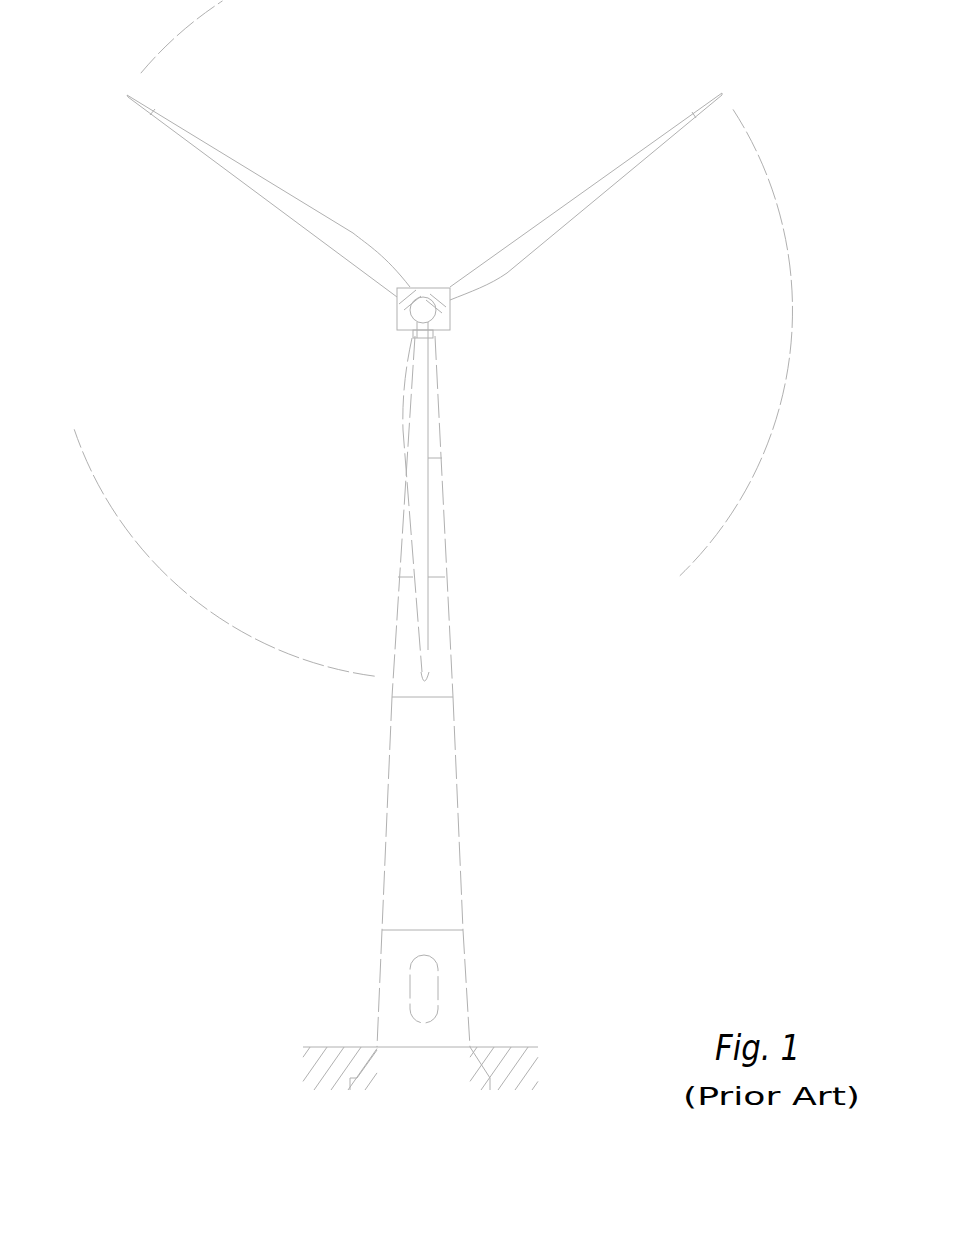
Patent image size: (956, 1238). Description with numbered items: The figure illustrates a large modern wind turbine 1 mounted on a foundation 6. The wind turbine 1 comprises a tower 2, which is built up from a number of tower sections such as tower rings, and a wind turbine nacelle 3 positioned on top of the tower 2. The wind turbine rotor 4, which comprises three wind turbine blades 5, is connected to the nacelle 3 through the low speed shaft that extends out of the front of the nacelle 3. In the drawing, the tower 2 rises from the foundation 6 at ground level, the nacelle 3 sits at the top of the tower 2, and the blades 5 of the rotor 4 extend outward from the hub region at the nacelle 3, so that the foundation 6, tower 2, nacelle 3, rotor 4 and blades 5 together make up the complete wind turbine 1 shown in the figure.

The wind turbine 1 is at (355, 890).
The tower 2 is at (450, 767).
The wind turbine nacelle 3 is at (447, 333).
The wind turbine rotor 4 is at (407, 305).
The wind turbine blades 5 is at (427, 542).
The foundation 6 is at (368, 1073).